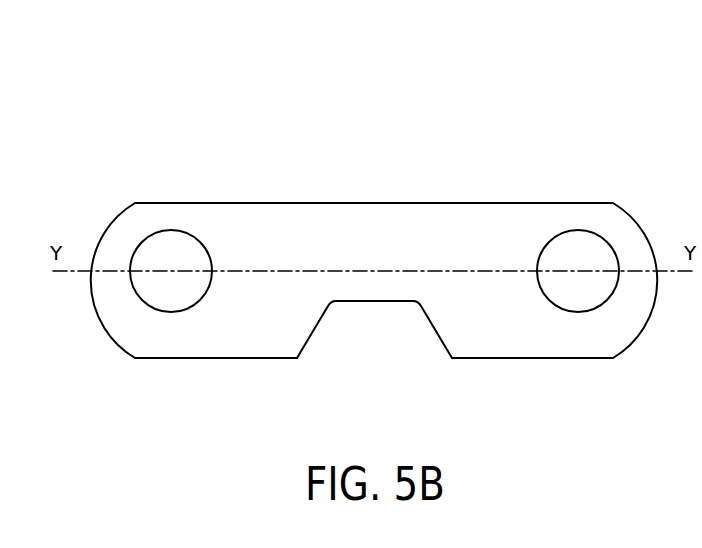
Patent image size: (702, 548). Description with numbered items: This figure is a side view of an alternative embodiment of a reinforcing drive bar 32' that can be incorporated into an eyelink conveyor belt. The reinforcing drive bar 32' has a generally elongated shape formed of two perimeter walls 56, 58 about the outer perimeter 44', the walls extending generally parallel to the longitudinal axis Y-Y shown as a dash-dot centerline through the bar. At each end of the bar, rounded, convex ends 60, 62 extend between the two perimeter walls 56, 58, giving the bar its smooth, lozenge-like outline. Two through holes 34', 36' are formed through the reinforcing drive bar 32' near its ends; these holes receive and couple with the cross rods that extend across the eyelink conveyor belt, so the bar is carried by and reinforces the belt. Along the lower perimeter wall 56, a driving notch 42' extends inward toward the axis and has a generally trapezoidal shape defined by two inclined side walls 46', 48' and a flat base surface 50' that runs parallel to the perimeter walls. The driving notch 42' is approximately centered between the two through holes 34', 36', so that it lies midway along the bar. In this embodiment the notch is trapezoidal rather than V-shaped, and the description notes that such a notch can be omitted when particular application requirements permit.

The reinforcing drive bar 32' is at (374, 248).
The through hole 34' is at (578, 232).
The through hole 36' is at (171, 232).
The driving notch 42' is at (374, 377).
The outer perimeter 44' is at (375, 171).
The side wall 46' is at (431, 353).
The side wall 48' is at (320, 353).
The base surface 50' is at (374, 336).
The perimeter wall 56 is at (532, 358).
The perimeter wall 58 is at (462, 203).
The rounded convex end 60 is at (643, 232).
The rounded convex end 62 is at (107, 233).